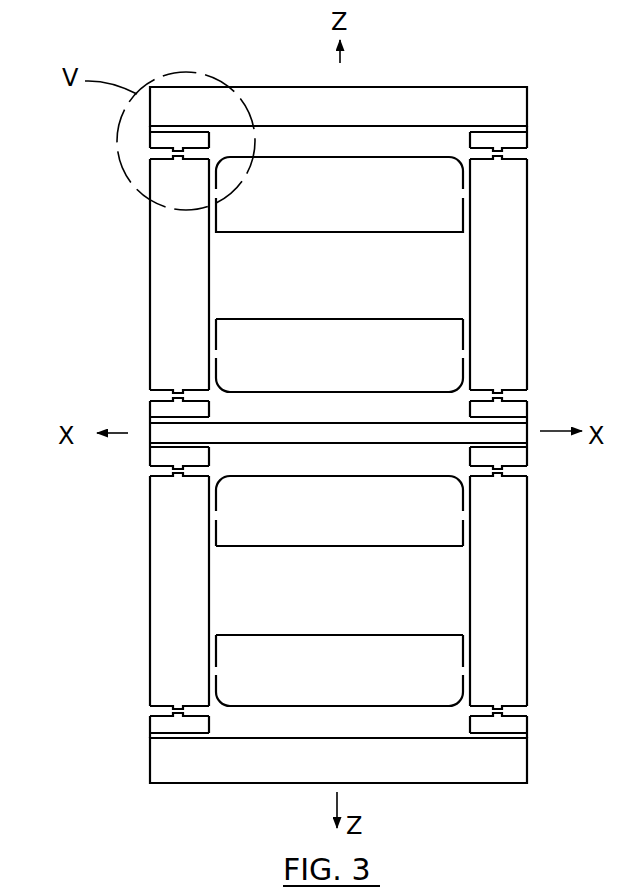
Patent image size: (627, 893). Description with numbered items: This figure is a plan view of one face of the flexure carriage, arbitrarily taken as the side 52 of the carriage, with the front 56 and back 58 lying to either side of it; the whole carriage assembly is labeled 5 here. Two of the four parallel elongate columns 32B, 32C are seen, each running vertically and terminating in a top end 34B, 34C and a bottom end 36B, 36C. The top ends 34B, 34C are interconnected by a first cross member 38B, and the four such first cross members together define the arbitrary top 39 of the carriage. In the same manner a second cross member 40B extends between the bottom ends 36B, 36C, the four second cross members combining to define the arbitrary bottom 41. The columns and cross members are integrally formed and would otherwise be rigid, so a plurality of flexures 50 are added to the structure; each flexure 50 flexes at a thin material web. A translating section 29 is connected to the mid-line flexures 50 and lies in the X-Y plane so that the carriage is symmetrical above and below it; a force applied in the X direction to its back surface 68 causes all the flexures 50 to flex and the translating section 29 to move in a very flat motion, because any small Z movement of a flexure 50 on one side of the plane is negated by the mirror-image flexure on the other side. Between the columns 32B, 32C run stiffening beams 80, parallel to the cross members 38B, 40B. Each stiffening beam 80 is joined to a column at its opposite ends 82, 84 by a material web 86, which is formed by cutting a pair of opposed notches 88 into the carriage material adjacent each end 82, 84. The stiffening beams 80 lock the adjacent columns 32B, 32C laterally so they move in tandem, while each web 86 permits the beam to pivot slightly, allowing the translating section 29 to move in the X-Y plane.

The flexure stage 5 is at (531, 396).
The translating section 29 is at (523, 425).
The elongate column 32B is at (526, 240).
The elongate column 32C is at (150, 279).
The top end 34B is at (522, 169).
The top end 34C is at (152, 181).
The bottom end 36B is at (519, 692).
The bottom end 36C is at (152, 691).
The first cross member 38B is at (462, 94).
The top 39 is at (462, 50).
The second cross member 40B is at (269, 777).
The bottom 41 is at (463, 794).
The flexure 50 is at (147, 153).
The side surface 52 is at (399, 249).
The front 56 is at (544, 302).
The back 58 is at (145, 249).
The back surface 68 is at (314, 437).
The stiffening beam 80 is at (341, 225).
The end of stiffening beam 82 is at (231, 315).
The end of stiffening beam 84 is at (452, 311).
The material web 86 is at (213, 356).
The notch 88 is at (218, 318).